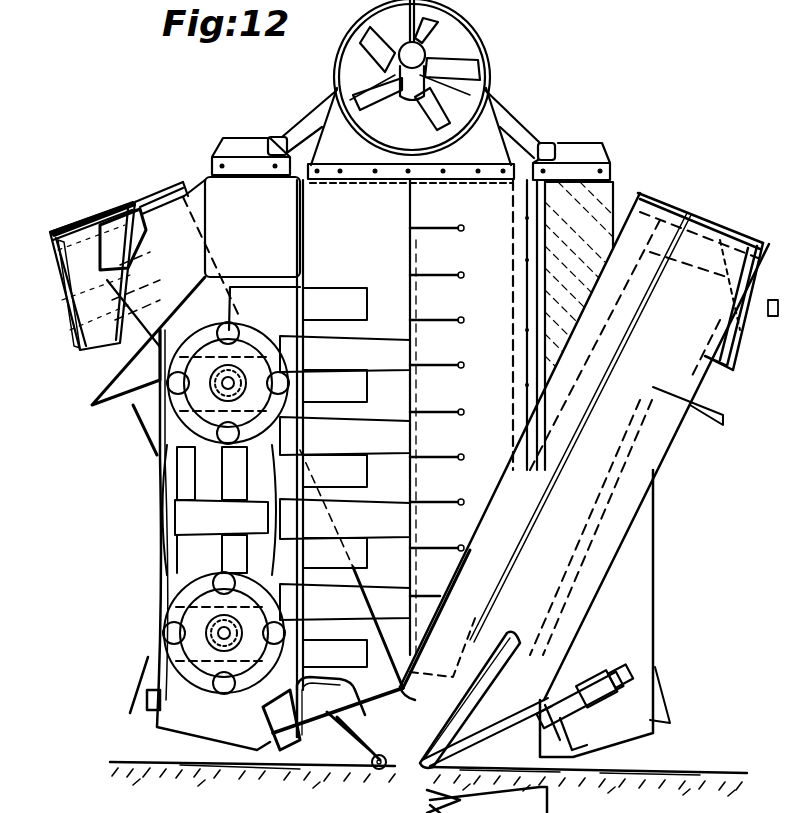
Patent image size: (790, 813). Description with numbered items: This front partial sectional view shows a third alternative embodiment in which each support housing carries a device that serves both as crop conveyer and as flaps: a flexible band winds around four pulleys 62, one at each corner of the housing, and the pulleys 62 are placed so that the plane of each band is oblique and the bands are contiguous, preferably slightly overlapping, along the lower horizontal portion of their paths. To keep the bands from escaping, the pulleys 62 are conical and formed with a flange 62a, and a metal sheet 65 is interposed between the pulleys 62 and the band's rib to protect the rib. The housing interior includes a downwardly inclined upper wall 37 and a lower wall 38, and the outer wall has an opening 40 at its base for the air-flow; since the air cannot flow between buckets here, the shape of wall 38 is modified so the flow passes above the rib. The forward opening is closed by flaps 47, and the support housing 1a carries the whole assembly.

The housing 1a is at (157, 545).
The upper wall 37 is at (122, 405).
The lower wall 38 is at (262, 712).
The opening 40 is at (150, 712).
The flaps 47 is at (100, 383).
The pulleys 62 is at (100, 345).
The flange 62a is at (80, 327).
The metal sheet 65 is at (290, 707).